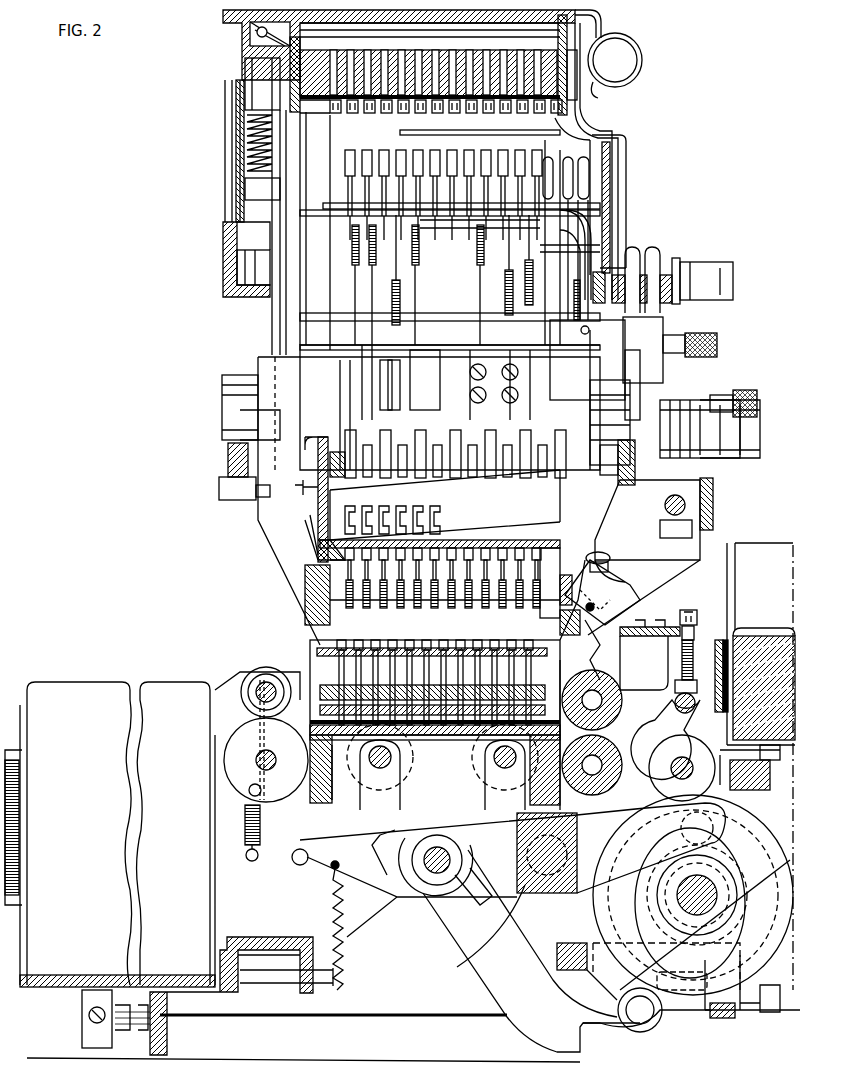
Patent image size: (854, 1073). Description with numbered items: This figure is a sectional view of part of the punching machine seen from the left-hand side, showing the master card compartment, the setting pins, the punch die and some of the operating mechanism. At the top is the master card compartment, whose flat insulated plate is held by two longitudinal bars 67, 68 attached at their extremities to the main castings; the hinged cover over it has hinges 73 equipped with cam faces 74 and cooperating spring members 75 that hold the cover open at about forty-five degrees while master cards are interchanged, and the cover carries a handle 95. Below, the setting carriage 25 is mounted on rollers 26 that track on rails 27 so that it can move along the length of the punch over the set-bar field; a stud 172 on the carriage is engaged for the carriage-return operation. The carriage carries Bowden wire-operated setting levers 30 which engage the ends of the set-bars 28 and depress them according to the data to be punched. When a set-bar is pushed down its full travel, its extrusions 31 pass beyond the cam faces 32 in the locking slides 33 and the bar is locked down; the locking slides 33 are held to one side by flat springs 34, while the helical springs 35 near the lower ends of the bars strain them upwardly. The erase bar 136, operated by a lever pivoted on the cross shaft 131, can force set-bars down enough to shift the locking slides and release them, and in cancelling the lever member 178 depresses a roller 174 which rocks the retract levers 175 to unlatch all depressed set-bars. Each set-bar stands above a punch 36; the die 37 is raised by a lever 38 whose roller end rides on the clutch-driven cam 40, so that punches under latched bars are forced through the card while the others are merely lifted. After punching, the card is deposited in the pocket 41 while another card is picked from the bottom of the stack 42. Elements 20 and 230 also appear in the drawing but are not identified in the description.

The main drive shaft 20 is at (717, 903).
The setting carriage 25 is at (220, 322).
The rollers 26 is at (222, 374).
The rails 27 is at (228, 463).
The set-bars 28 is at (345, 432).
The setting levers 30 is at (428, 352).
The extrusions 31 is at (400, 514).
The cam faces 32 is at (438, 514).
The locking slides 33 is at (318, 540).
The flat springs 34 is at (318, 510).
The helical springs 35 is at (318, 598).
The punch 36 is at (330, 645).
The die 37 is at (295, 672).
The lever 38 is at (468, 958).
The clutch-driven cam 40 is at (612, 910).
The pocket 41 is at (88, 690).
The stack 42 is at (765, 632).
The longitudinal bar 67 is at (297, 112).
The longitudinal bar 68 is at (568, 115).
The hinges 73 is at (247, 44).
The cam faces 74 is at (257, 40).
The spring members 75 is at (244, 140).
The handle 95 is at (640, 55).
The cross shaft 131 is at (457, 320).
The erase bar 136 is at (380, 383).
The stud 172 is at (700, 395).
The roller 174 is at (606, 570).
The retract levers 175 is at (614, 592).
The lever member 178 is at (620, 178).
The actuating rod 230 is at (326, 262).